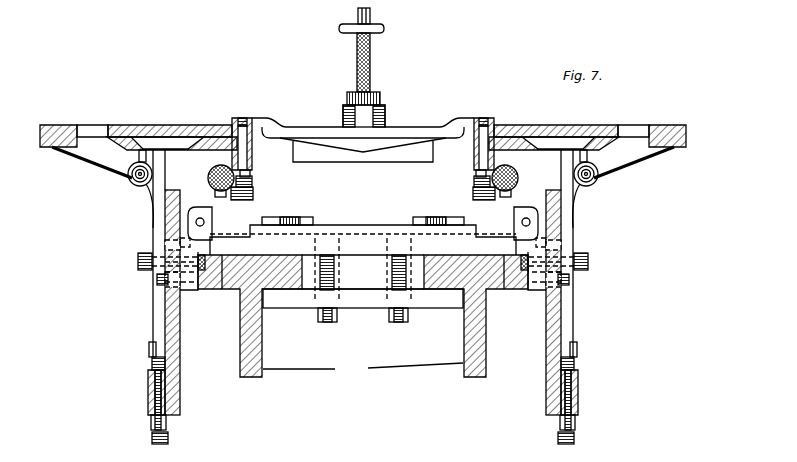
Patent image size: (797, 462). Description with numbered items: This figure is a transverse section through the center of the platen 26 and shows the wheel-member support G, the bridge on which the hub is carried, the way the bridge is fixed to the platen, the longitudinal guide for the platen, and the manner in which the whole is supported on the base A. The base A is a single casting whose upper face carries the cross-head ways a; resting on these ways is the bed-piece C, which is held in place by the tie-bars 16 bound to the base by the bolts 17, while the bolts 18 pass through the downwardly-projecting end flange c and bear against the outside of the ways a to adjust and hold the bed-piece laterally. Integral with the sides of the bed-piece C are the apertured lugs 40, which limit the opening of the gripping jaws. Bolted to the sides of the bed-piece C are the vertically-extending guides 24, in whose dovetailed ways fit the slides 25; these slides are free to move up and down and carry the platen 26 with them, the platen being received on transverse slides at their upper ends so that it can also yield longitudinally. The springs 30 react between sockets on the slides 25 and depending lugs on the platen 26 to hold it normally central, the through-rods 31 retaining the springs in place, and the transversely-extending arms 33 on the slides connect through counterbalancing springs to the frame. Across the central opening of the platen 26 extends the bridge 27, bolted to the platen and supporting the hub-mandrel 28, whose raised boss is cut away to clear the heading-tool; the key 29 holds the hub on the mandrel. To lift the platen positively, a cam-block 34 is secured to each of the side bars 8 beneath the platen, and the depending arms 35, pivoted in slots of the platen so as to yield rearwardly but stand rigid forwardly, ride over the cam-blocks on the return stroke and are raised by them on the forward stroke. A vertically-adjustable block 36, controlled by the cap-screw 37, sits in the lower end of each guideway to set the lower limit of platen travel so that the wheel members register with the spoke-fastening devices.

The platen 26 is at (584, 126).
The slides 25 is at (153, 317).
The vertically-extending guides 24 is at (181, 354).
The transversely-extending arms 33 is at (149, 347).
The vertically-adjustable block 36 is at (148, 386).
The cap-screw 37 is at (168, 438).
The bolts 18 is at (138, 261).
The springs 30 is at (135, 163).
The through-rods 31 is at (128, 177).
The side bars 8 is at (208, 174).
The depending arms 35 is at (251, 166).
The cam-block 34 is at (253, 194).
The apertured lugs 40 is at (213, 220).
The end flange c is at (191, 291).
The cross-head ways a is at (363, 316).
The tie-bars 16 is at (363, 281).
The bolts 17 is at (396, 321).
The bed-piece C is at (363, 236).
The base A is at (363, 374).
The bridge 27 is at (412, 134).
The hub-mandrel 28 is at (371, 58).
The key 29 is at (372, 25).
The wheel-member support G is at (343, 78).